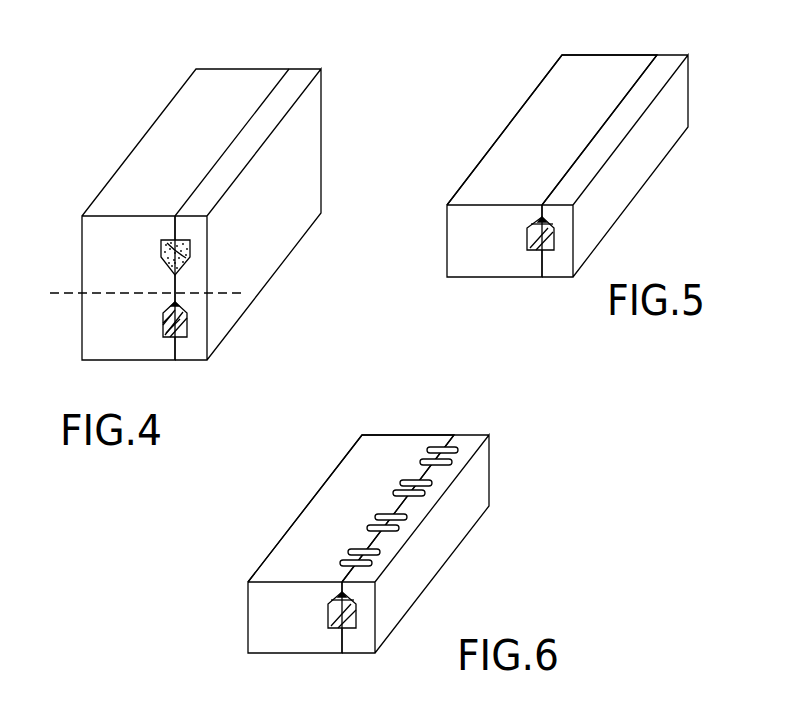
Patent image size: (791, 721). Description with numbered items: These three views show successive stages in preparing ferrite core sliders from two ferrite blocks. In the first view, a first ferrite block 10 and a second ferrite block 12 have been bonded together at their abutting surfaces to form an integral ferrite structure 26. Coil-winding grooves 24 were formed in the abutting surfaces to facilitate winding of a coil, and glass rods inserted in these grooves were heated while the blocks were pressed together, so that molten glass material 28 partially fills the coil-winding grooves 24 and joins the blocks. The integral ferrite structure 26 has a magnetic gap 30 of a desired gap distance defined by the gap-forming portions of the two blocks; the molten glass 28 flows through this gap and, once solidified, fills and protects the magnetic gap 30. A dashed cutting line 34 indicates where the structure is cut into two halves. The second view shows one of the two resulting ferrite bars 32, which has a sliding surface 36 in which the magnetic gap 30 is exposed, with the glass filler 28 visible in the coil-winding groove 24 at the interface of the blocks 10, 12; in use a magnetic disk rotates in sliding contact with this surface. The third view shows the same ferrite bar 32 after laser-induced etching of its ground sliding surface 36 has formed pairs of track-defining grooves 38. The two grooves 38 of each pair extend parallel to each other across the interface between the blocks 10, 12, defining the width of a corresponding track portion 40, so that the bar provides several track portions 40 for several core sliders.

In FIG. 4, the first ferrite block 10 is at (244, 77).
In FIG. 5, the first ferrite block 10 is at (472, 267).
In FIG. 6, the first ferrite block 10 is at (270, 645).
In FIG. 4, the second ferrite block 12 is at (303, 77).
In FIG. 5, the second ferrite block 12 is at (558, 263).
In FIG. 6, the second ferrite block 12 is at (358, 645).
In FIG. 4, the coil-winding groove 24 is at (165, 252).
In FIG. 5, the coil-winding groove 24 is at (537, 249).
In FIG. 6, the coil-winding groove 24 is at (337, 622).
In FIG. 4, the integral ferrite structure 26 is at (186, 194).
In FIG. 4, the glass material 28 is at (190, 247).
In FIG. 5, the glass material 28 is at (550, 220).
In FIG. 6, the glass material 28 is at (357, 612).
In FIG. 4, the magnetic gap 30 is at (166, 278).
In FIG. 5, the magnetic gap 30 is at (628, 73).
In FIG. 6, the magnetic gap 30 is at (459, 426).
In FIG. 5, the ferrite bar 32 is at (551, 165).
In FIG. 6, the ferrite bar 32 is at (350, 534).
In FIG. 4, the cutting line 34 is at (70, 295).
In FIG. 5, the sliding surface 36 is at (565, 132).
In FIG. 6, the sliding surface 36 is at (344, 539).
In FIG. 6, the track-defining groove 38 is at (427, 450).
In FIG. 6, the track portion 40 is at (452, 462).